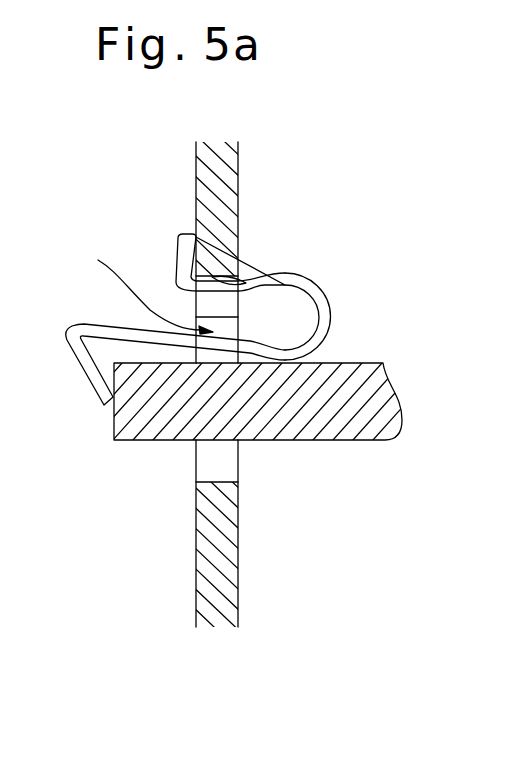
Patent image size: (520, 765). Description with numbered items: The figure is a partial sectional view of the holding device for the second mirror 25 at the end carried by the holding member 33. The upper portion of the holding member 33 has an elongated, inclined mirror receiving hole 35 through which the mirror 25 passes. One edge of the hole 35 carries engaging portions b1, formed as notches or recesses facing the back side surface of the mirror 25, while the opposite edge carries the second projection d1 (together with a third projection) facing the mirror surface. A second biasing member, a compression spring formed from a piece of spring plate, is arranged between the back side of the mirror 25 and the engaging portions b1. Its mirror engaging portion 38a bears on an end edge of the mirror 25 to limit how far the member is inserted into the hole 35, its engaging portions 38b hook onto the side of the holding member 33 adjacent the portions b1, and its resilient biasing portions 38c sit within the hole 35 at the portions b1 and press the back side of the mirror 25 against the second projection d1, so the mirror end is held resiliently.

The holding member 33 is at (239, 156).
The second mirror 25 is at (385, 440).
The mirror receiving hole 35 is at (134, 283).
The mirror engaging portion 38a is at (93, 385).
The engaging portions 38b is at (176, 237).
The resilient biasing portions 38c is at (330, 323).
The engaging portions b1 is at (242, 279).
The second projection d1 is at (238, 462).